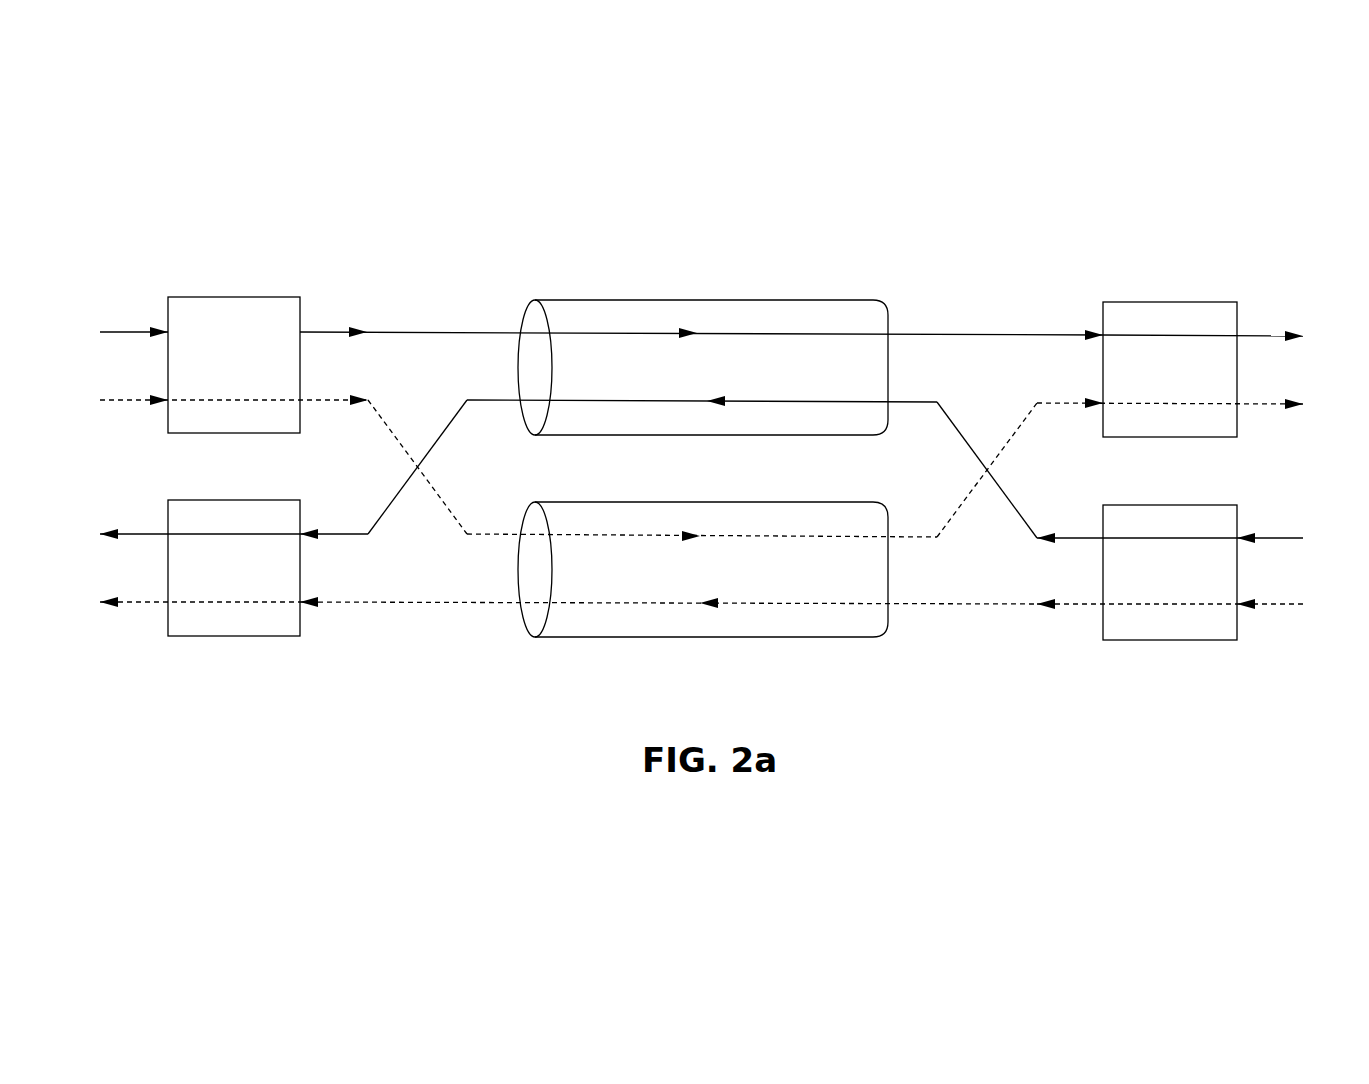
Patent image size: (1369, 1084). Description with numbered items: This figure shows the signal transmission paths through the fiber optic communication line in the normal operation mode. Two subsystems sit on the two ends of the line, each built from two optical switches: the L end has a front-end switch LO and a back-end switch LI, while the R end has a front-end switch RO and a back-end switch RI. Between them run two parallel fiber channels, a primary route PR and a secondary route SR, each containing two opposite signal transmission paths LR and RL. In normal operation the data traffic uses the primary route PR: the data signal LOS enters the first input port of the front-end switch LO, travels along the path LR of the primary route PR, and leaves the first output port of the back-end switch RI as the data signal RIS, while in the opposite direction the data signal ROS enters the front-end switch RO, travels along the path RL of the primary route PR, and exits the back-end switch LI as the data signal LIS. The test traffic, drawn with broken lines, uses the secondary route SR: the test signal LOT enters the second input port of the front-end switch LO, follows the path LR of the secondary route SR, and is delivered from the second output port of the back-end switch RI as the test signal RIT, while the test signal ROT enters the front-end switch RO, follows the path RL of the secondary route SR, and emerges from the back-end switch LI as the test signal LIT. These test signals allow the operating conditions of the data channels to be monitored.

The front-end switch LO is at (215, 297).
The back-end switch LI is at (215, 500).
The back-end switch RI is at (1172, 302).
The front-end switch RO is at (1172, 505).
The primary route PR is at (703, 300).
The secondary route SR is at (703, 502).
The signal transmission path LR is at (733, 335).
The signal transmission path RL is at (610, 400).
The data signal LOS is at (205, 332).
The test signal LOT is at (255, 461).
The data signal LIS is at (257, 473).
The test signal LIT is at (182, 602).
The data signal RIS is at (1218, 336).
The test signal RIT is at (1144, 465).
The data signal ROS is at (1147, 476).
The test signal ROT is at (1197, 605).